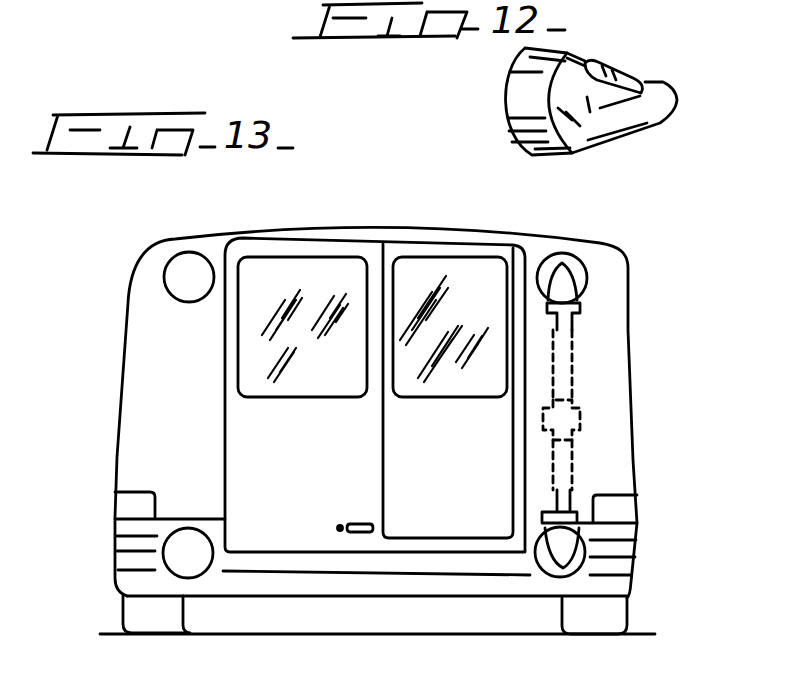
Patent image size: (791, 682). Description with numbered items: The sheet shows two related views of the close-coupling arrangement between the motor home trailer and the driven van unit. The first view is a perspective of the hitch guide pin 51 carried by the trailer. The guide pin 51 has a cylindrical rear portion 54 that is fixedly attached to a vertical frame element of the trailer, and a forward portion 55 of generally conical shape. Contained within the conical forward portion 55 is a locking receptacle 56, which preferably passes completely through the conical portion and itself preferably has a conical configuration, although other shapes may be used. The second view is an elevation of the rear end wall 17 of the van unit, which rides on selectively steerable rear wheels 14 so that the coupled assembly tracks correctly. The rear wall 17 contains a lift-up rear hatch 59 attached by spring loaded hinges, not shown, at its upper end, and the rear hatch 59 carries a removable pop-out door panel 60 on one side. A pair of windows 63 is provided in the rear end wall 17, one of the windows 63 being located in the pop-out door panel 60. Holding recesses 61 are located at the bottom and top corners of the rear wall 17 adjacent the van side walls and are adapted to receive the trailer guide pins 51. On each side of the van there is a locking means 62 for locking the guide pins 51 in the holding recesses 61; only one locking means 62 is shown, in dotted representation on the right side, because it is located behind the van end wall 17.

In FIG. 12, the hitch guide pin 51 is at (500, 148).
In FIG. 12, the cylindrical rear portion 54 is at (527, 107).
In FIG. 12, the forward portion 55 is at (573, 117).
In FIG. 12, the locking receptacle 56 is at (610, 74).
In FIG. 13, the rear wheels 14 is at (150, 622).
In FIG. 13, the rear end wall 17 is at (148, 306).
In FIG. 13, the lift-up rear hatch 59 is at (258, 428).
In FIG. 13, the pop-out door panel 60 is at (490, 502).
In FIG. 13, the holding recesses 61 is at (197, 268).
In FIG. 13, the locking means 62 is at (588, 387).
In FIG. 13, the windows 63 is at (283, 278).